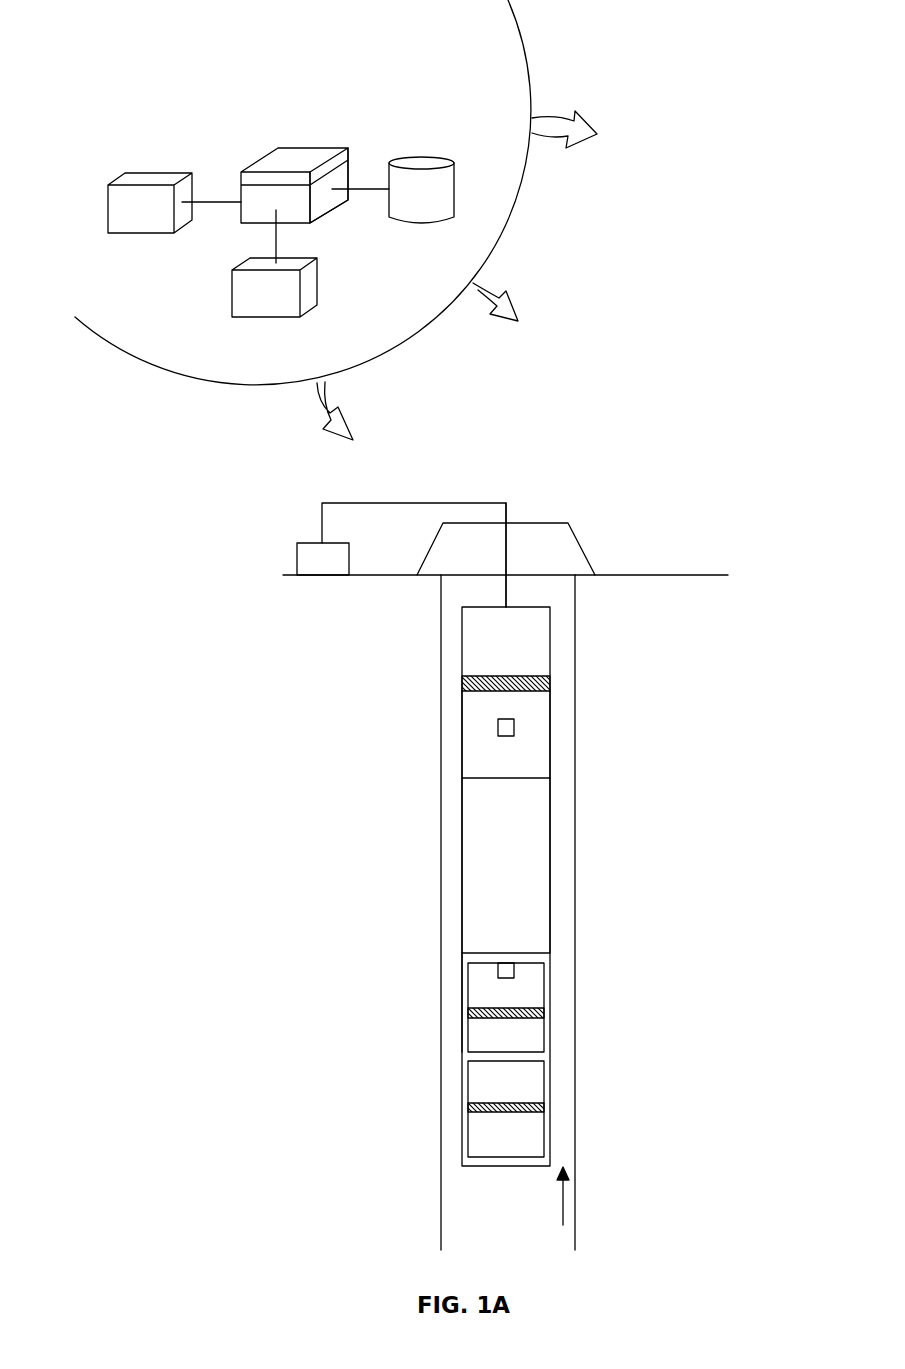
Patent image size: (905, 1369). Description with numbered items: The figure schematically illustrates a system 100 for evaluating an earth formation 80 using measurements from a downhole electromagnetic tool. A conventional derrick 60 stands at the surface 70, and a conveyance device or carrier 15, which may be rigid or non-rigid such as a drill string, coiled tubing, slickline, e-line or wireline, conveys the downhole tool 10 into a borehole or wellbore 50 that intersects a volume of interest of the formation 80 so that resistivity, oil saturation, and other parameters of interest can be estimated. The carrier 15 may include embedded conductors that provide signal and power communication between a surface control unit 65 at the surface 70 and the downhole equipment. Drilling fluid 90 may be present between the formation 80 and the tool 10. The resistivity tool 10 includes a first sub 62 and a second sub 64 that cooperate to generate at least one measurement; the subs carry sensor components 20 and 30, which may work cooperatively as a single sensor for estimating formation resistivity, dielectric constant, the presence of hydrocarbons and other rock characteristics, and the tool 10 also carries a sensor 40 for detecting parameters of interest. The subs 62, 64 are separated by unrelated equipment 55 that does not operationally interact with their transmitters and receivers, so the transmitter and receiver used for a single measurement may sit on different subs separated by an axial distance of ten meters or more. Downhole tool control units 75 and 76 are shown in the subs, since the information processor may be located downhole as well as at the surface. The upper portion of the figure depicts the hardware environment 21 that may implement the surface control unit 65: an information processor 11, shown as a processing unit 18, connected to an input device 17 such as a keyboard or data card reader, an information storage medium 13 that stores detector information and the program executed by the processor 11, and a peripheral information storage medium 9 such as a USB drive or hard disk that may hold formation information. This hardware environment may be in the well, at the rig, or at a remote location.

The surface control system 21 is at (194, 64).
The input device 17 is at (123, 183).
The processor 18 is at (297, 146).
The information processor 11 is at (352, 172).
The peripheral information storage medium 9 is at (423, 155).
The information storage medium 13 is at (248, 267).
The system 100 is at (653, 484).
The earth formation 80 is at (730, 790).
The surface control unit 65 is at (311, 542).
The derrick 60 is at (560, 523).
The surface 70 is at (566, 576).
The conveyance device 15 is at (505, 580).
The downhole tool 10 is at (357, 797).
The borehole 50 is at (577, 647).
The sensor component 20 is at (551, 683).
The first sub 62 is at (551, 741).
The downhole tool control unit 75 is at (498, 727).
The unrelated equipment 55 is at (552, 860).
The sensor component 30 is at (545, 1013).
The downhole tool control unit 76 is at (498, 970).
The second sub 64 is at (462, 1020).
The sensor 40 is at (551, 1100).
The drilling fluid 90 is at (563, 1195).